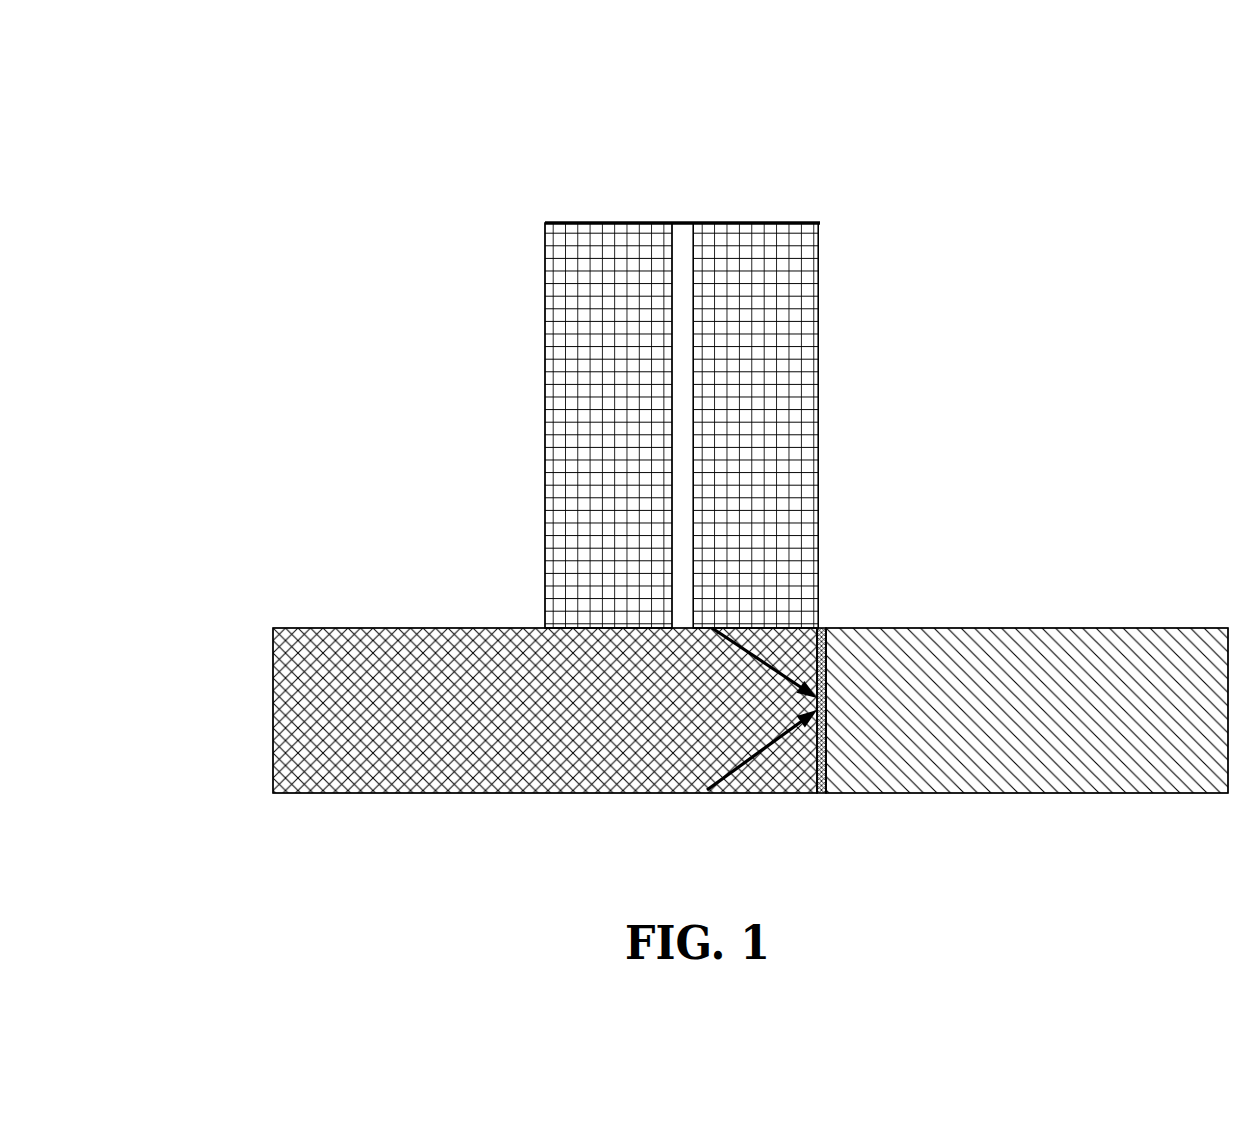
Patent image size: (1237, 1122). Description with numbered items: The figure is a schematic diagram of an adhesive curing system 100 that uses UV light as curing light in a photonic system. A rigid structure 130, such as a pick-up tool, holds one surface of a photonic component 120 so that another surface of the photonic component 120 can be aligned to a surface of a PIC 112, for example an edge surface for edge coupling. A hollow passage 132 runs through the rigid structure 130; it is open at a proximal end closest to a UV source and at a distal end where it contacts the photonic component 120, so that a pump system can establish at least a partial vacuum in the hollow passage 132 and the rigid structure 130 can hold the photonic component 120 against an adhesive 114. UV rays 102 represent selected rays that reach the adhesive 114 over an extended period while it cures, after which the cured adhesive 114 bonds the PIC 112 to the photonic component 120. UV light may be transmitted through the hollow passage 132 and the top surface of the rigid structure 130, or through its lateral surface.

The adhesive curing system 100 is at (277, 236).
The UV rays 102 is at (748, 658).
The PIC 112 is at (1190, 792).
The adhesive 114 is at (818, 628).
The photonic component 120 is at (390, 795).
The rigid structure 130 is at (532, 312).
The hollow passage 132 is at (682, 240).